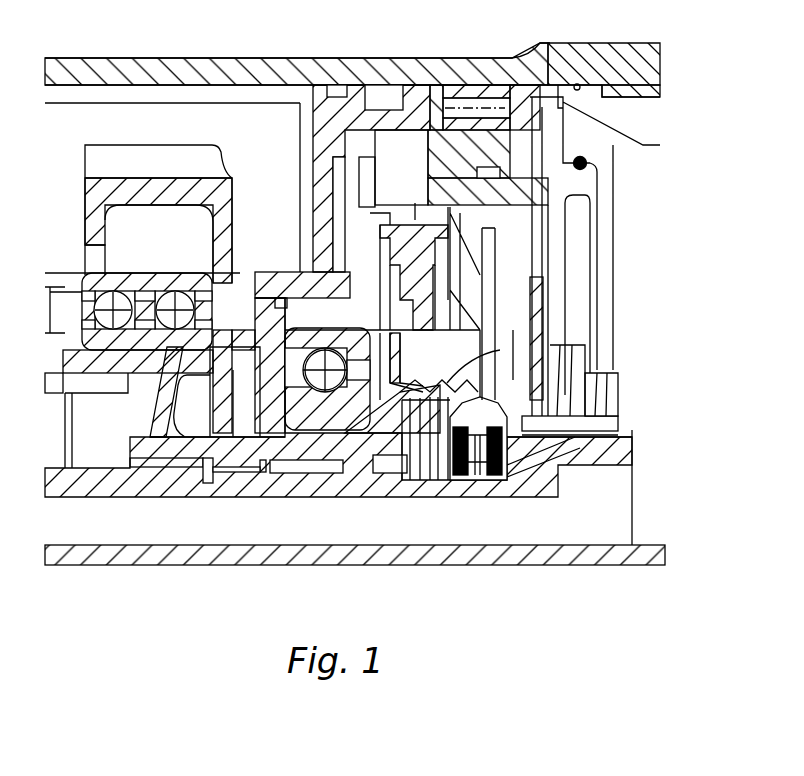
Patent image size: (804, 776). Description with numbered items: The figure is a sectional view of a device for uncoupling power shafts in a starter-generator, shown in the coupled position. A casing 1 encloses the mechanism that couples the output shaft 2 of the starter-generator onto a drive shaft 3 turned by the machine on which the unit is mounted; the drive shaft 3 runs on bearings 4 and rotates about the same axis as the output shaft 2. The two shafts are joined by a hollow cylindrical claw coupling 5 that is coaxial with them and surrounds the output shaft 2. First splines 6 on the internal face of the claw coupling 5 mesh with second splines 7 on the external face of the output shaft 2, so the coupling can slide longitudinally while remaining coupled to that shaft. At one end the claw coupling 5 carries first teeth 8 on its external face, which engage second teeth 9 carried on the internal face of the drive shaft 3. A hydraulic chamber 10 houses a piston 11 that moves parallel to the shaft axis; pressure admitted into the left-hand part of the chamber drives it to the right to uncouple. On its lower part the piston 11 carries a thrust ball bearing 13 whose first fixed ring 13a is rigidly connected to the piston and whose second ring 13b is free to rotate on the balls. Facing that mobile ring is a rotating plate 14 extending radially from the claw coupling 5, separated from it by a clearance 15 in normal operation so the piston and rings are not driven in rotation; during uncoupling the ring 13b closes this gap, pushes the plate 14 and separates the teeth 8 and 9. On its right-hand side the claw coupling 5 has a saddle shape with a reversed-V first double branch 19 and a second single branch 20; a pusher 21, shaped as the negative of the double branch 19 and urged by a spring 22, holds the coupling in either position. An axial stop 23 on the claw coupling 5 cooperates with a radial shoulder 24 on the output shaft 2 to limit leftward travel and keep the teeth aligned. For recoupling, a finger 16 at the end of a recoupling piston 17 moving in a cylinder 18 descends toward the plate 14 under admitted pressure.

The casing 1 is at (548, 58).
The output shaft 2 is at (60, 497).
The drive shaft 3 is at (95, 200).
The bearings 4 is at (82, 292).
The claw coupling 5 is at (400, 480).
The first splines 6 is at (247, 445).
The second splines 7 is at (262, 472).
The first teeth 8 is at (128, 457).
The second teeth 9 is at (128, 437).
The hydraulic chamber 10 is at (316, 85).
The piston 11 is at (345, 172).
The ball bearing 13 is at (320, 385).
The first fixed ring 13a is at (292, 430).
The second ring 13b is at (348, 400).
The rotating plate 14 is at (465, 420).
The clearance 15 is at (420, 440).
The finger 16 is at (452, 281).
The recoupling piston 17 is at (453, 248).
The cylinder 18 is at (455, 226).
The first double branch 19 is at (500, 350).
The second single branch 20 is at (477, 392).
The pusher 21 is at (508, 432).
The spring 22 is at (510, 445).
The axial stop 23 is at (222, 472).
The radial shoulder 24 is at (187, 483).